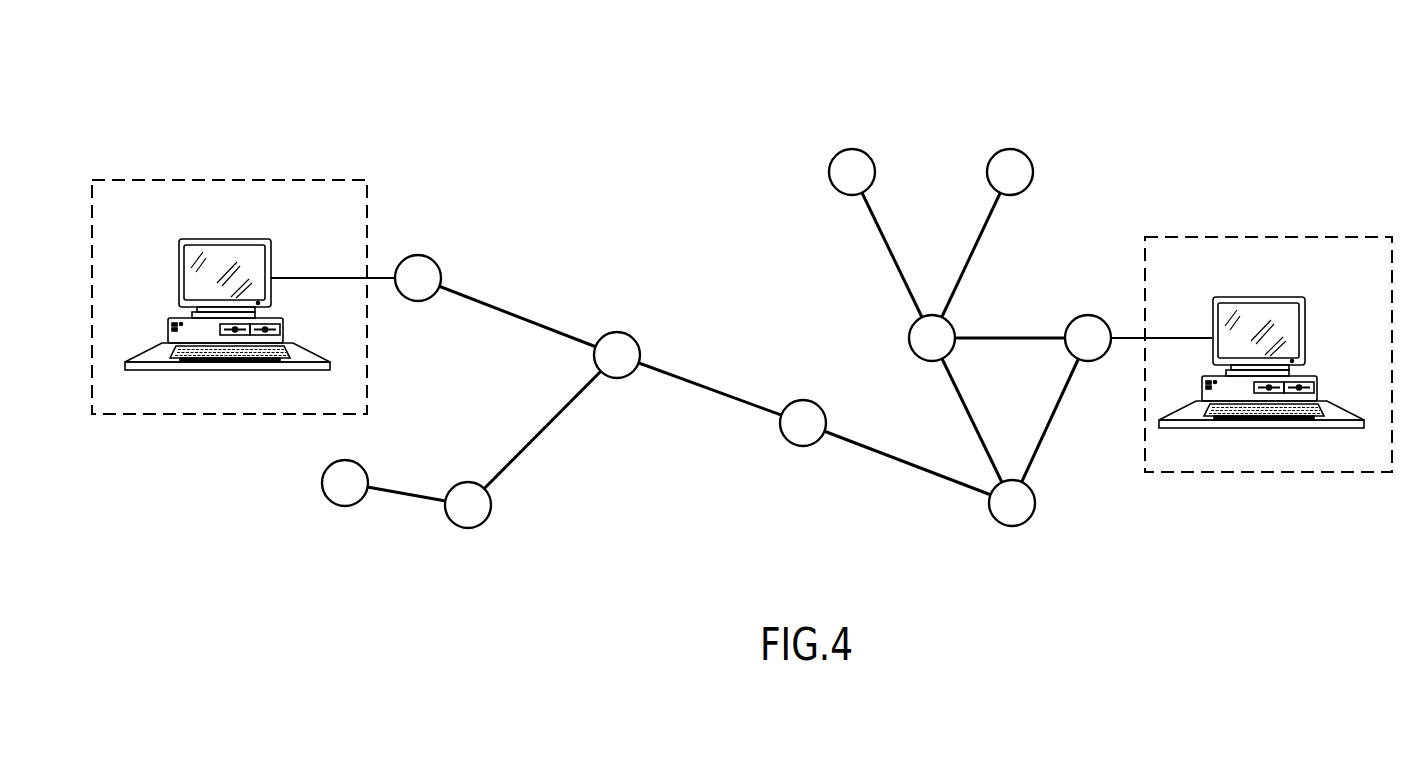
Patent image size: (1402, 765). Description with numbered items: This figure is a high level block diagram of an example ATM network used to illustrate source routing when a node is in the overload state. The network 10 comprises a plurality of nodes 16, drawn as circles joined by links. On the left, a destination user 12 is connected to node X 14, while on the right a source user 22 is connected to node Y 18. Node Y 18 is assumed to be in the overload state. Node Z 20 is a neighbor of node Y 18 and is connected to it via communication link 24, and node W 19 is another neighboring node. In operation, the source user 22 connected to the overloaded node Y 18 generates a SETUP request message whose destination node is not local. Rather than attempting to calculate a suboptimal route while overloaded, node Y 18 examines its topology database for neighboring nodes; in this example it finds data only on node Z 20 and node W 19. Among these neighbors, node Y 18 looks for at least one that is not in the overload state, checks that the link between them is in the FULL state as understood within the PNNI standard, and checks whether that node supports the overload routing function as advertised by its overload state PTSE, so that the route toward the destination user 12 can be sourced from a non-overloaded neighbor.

The network 10 is at (443, 102).
The destination user 12 is at (218, 239).
The node X 14 is at (423, 257).
The nodes 16 is at (348, 507).
The node Y 18 is at (1080, 316).
The node W 19 is at (909, 332).
The node Z 20 is at (1036, 503).
The source user 22 is at (1252, 297).
The communication link 24 is at (1050, 425).